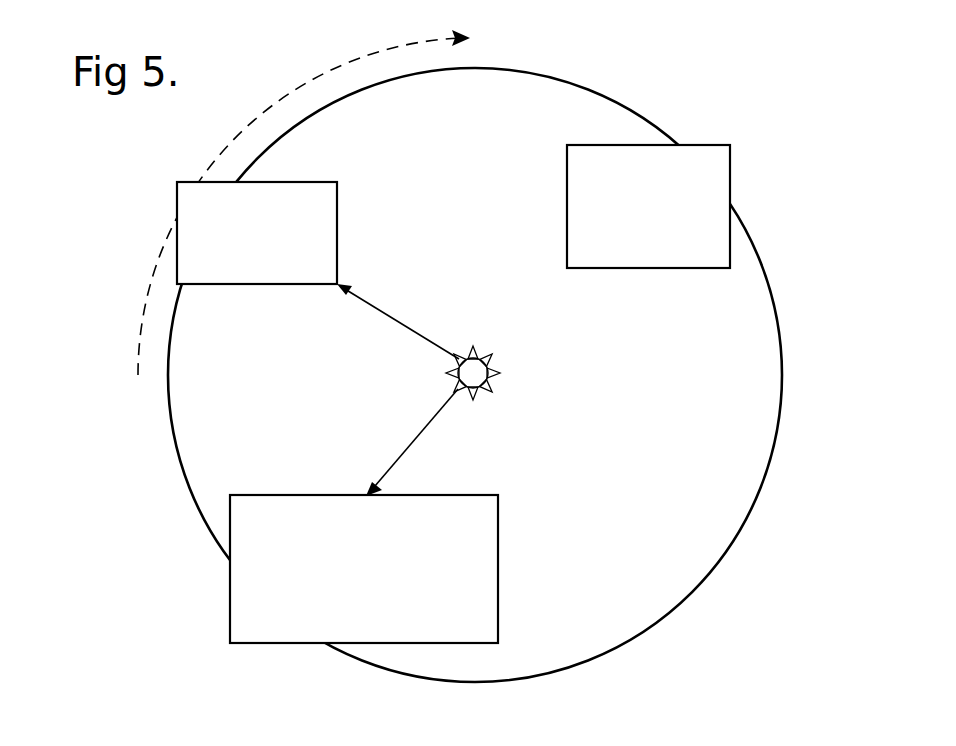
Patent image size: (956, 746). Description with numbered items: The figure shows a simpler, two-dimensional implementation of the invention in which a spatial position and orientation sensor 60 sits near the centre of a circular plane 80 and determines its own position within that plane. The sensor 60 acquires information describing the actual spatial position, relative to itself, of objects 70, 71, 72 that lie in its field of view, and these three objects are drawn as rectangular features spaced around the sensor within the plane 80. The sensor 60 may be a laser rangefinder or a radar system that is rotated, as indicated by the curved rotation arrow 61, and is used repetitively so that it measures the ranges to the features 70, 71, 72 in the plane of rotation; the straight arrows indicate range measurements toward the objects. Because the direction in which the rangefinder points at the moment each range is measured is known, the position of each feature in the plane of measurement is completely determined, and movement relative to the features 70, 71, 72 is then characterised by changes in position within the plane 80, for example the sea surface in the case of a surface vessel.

The spatial position and orientation sensor 60 is at (479, 363).
The rotation of the sensor 61 is at (278, 90).
The object 70 is at (288, 583).
The object 71 is at (196, 257).
The object 72 is at (708, 181).
The plane 80 is at (731, 470).